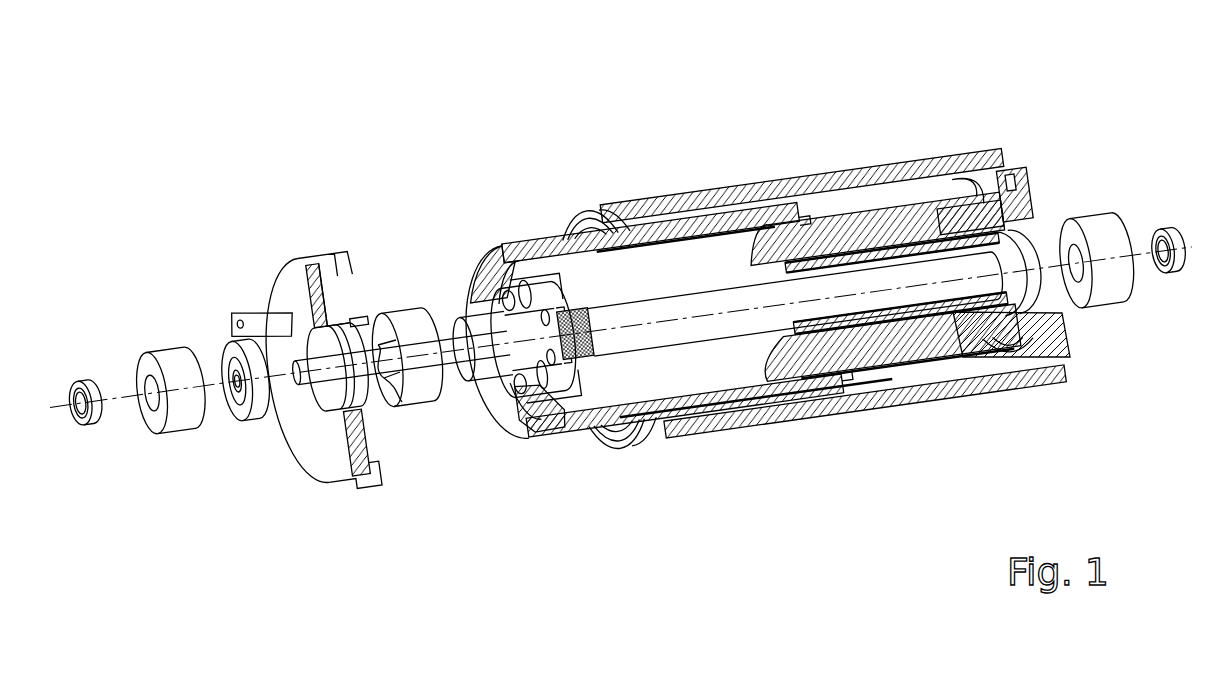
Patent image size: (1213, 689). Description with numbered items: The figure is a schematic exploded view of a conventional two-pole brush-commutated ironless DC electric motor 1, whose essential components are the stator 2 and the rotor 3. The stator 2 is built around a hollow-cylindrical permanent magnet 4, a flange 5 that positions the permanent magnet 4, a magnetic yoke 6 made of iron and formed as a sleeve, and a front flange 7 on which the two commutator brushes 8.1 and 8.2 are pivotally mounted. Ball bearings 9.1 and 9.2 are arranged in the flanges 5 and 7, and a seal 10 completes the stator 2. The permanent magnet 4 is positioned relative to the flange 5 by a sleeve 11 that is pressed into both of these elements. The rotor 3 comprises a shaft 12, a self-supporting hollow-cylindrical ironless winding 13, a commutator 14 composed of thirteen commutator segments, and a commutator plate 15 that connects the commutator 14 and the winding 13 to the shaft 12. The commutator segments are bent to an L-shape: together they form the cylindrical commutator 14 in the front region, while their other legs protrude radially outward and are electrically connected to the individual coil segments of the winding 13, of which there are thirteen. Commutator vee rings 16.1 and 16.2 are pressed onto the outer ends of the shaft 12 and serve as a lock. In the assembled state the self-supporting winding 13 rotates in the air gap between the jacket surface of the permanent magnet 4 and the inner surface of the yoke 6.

The DC electric motor 1 is at (803, 128).
The stator 2 is at (995, 151).
The rotor 3 is at (591, 194).
The permanent magnet 4 is at (855, 358).
The flange 5 is at (1050, 330).
The magnetic yoke 6 is at (930, 395).
The front flange 7 is at (292, 302).
The commutator brush 8.1 is at (393, 318).
The commutator brush 8.2 is at (385, 412).
The ball bearing 9.1 is at (183, 415).
The ball bearing 9.2 is at (1093, 222).
The seal 10 is at (250, 400).
The sleeve 11 is at (870, 245).
The shaft 12 is at (695, 300).
The self-supporting hollow-cylindrical ironless winding 13 is at (550, 273).
The commutator 14 is at (484, 362).
The commutator plate 15 is at (515, 263).
The commutator vee ring 16.1 is at (84, 425).
The commutator vee ring 16.2 is at (1165, 228).